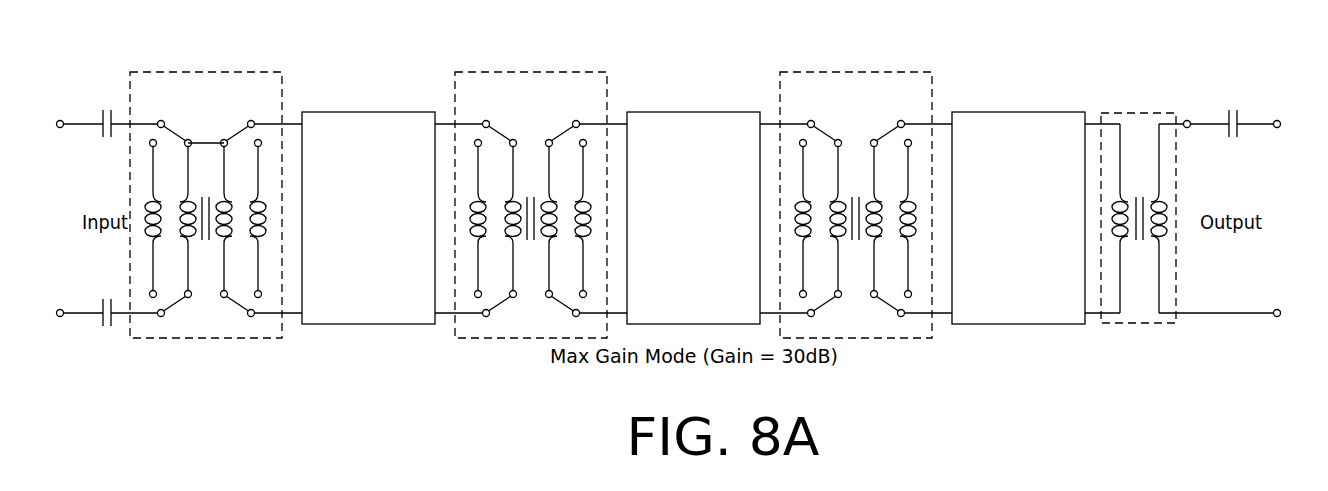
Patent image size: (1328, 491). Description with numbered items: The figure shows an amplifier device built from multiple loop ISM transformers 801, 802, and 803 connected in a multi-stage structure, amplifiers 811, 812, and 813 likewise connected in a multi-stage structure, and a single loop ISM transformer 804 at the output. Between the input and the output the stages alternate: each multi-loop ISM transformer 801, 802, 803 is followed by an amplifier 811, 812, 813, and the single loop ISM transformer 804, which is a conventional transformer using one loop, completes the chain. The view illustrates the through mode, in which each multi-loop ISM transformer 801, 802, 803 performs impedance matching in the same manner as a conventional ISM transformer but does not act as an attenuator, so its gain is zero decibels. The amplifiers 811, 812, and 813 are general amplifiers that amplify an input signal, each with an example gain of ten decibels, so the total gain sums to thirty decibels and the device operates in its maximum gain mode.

The multi-loop ISM transformer 801 is at (205, 72).
The multi-loop ISM transformer 802 is at (530, 72).
The multi-loop ISM transformer 803 is at (855, 72).
The single loop ISM transformer 804 is at (1138, 113).
The amplifier 811 is at (368, 112).
The amplifier 812 is at (693, 112).
The amplifier 813 is at (1018, 112).